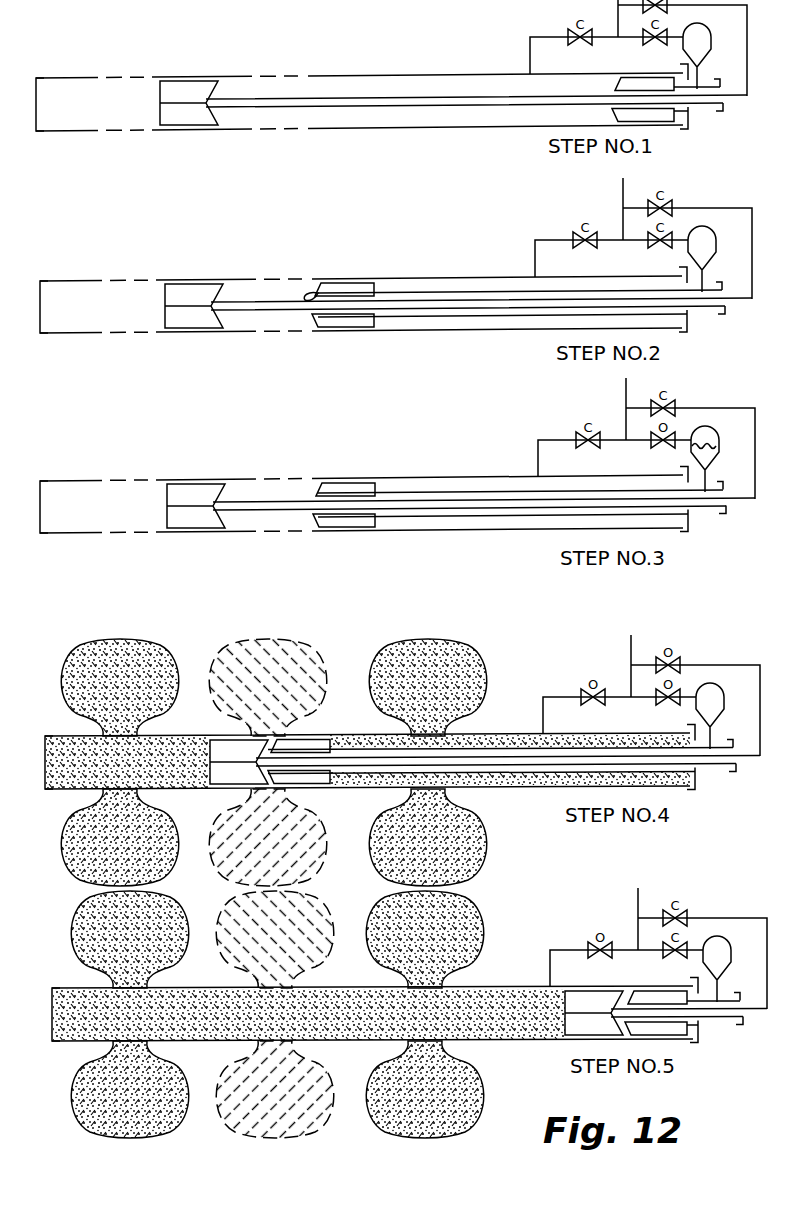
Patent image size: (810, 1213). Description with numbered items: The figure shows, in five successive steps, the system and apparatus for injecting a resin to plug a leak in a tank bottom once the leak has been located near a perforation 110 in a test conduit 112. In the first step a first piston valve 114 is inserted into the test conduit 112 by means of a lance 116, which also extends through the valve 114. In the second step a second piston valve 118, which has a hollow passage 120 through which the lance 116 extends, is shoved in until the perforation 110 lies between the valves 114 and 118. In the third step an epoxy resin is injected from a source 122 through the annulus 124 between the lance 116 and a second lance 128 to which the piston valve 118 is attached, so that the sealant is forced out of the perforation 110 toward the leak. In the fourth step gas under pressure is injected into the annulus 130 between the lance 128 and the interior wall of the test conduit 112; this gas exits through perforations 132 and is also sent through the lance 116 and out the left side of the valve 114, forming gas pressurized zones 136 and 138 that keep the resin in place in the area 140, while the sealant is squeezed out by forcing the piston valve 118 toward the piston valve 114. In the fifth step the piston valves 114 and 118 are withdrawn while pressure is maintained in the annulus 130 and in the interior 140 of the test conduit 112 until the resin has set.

The perforation 110 is at (262, 74).
The test conduit 112 is at (88, 78).
The first piston valve 114 is at (182, 88).
The lance 116 is at (442, 100).
The second piston valve 118 is at (372, 284).
The hollow passage 120 is at (312, 297).
The source 122 is at (702, 432).
The annulus 124 is at (430, 500).
The lance 128 is at (460, 292).
The annulus 130 is at (487, 737).
The perforations 132 is at (438, 712).
The gas pressurized zone 136 is at (385, 660).
The gas pressurized zone 138 is at (130, 650).
The area (interior of the test conduit) 140 is at (263, 723).